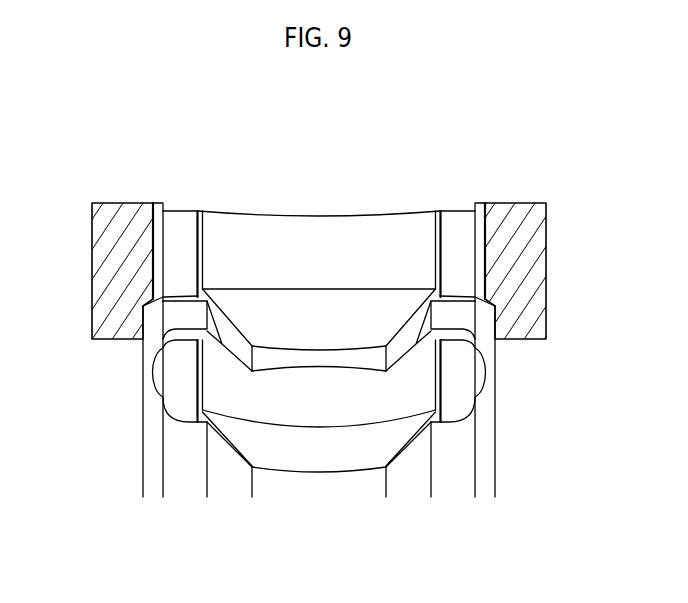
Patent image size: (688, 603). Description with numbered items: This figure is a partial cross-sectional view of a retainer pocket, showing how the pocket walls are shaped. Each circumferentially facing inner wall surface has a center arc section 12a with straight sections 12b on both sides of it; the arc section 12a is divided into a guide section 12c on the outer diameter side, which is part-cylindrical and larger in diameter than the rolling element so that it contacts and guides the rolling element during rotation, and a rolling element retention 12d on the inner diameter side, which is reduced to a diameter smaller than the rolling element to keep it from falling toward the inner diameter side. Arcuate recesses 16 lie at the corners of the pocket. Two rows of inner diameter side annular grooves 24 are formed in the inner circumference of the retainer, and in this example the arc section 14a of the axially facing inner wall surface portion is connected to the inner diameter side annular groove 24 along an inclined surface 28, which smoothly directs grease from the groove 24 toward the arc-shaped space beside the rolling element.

The arc section 12a is at (366, 143).
The straight sections 12b is at (205, 233).
The guide section 12c is at (292, 237).
The rolling element retention 12d is at (322, 312).
The arc section 14a is at (149, 277).
The arcuate recesses 16 is at (178, 232).
The inner diameter side annular grooves 24 is at (152, 478).
The inclined surface 28 is at (143, 304).